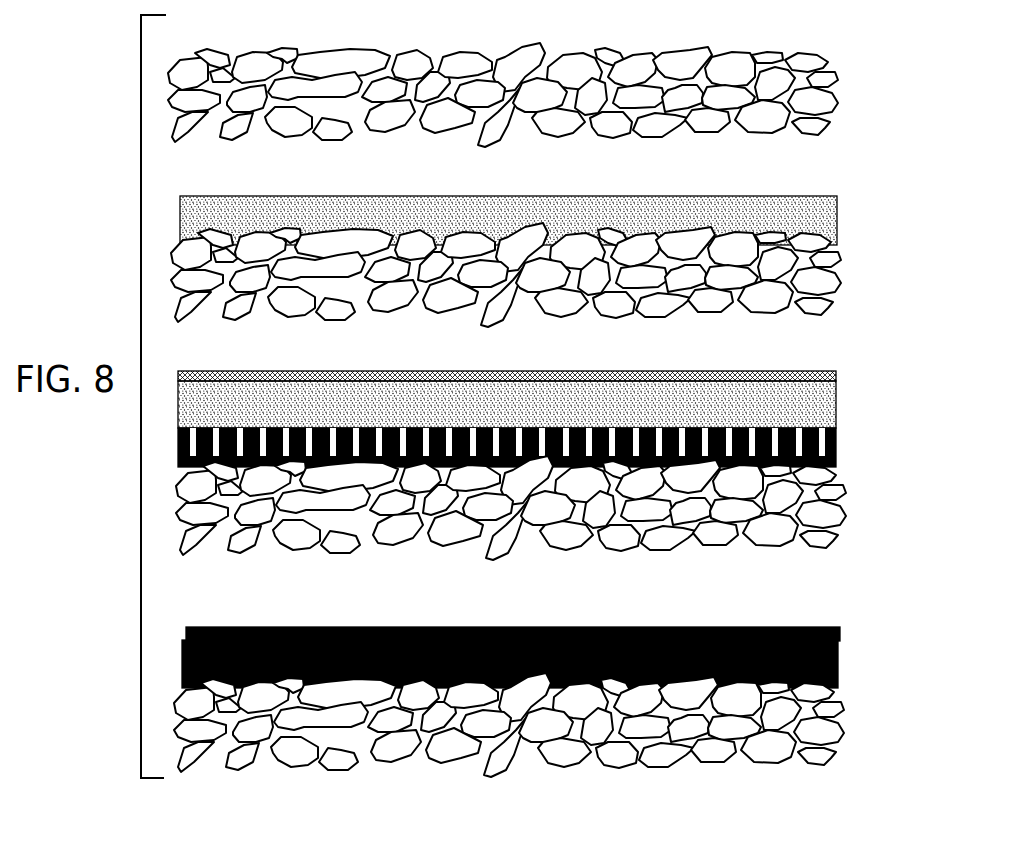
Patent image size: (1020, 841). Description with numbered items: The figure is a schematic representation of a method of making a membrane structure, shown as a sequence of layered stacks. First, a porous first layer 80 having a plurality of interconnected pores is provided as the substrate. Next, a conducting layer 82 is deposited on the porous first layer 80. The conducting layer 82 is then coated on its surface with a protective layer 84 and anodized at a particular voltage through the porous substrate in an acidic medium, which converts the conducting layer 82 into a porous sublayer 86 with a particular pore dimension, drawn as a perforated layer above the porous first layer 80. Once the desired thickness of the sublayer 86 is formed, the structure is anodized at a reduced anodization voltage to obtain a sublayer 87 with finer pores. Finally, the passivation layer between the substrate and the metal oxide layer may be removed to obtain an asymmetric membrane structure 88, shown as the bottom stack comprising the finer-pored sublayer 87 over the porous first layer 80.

The porous first layer 80 is at (534, 301).
The conducting layer 82 is at (837, 213).
The protective layer 84 is at (836, 377).
The porous sublayer 86 is at (539, 447).
The sublayer with finer pores 87 is at (865, 765).
The asymmetric membrane structure 88 is at (546, 687).